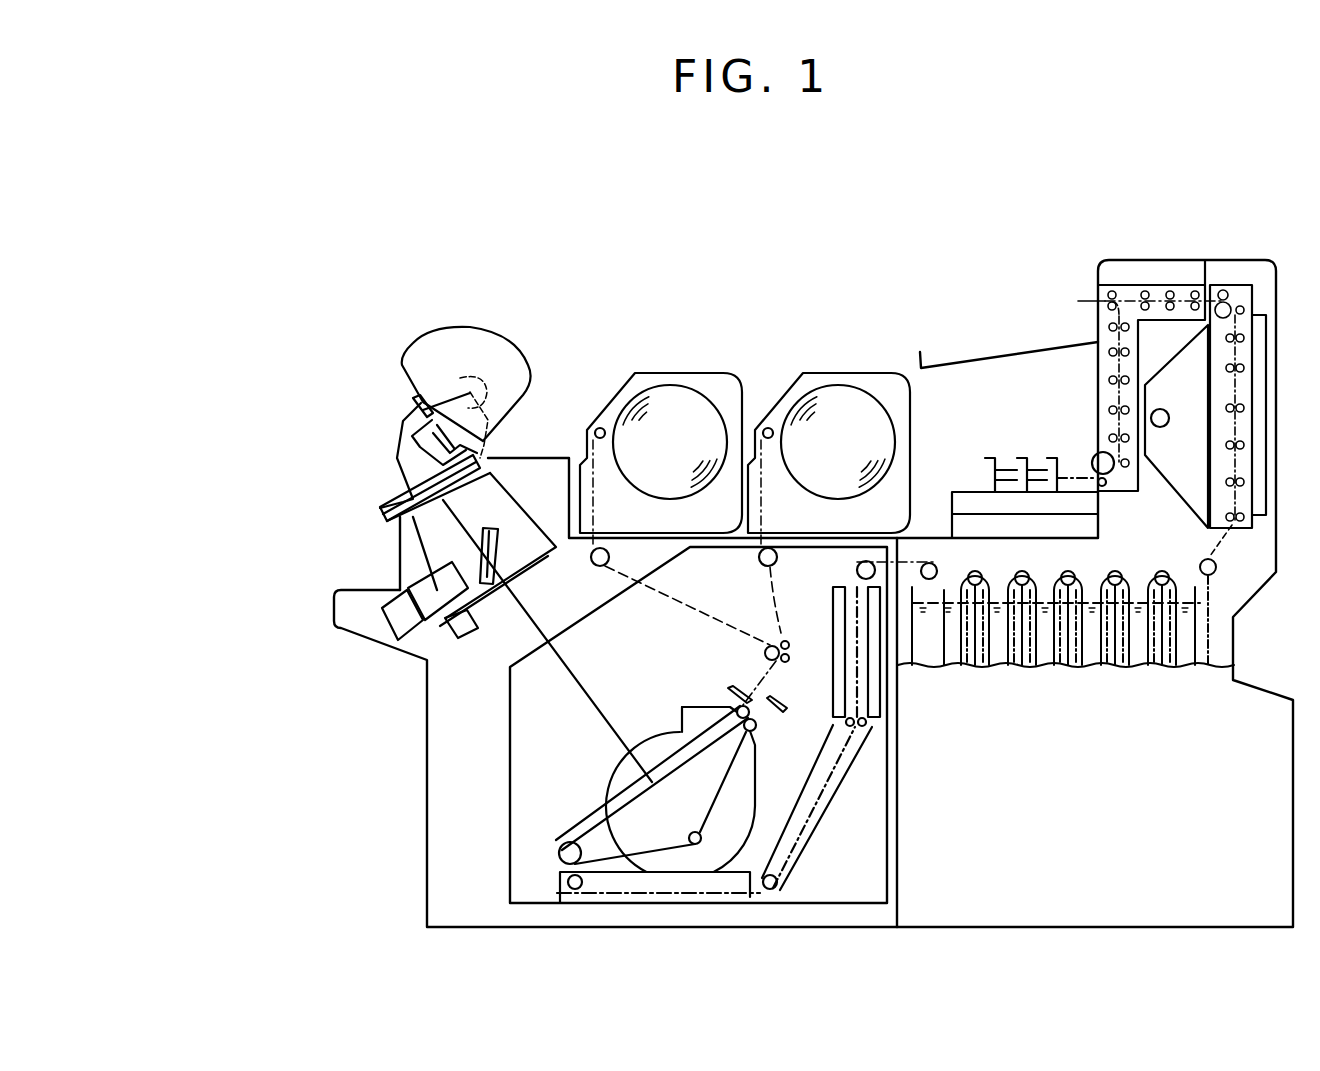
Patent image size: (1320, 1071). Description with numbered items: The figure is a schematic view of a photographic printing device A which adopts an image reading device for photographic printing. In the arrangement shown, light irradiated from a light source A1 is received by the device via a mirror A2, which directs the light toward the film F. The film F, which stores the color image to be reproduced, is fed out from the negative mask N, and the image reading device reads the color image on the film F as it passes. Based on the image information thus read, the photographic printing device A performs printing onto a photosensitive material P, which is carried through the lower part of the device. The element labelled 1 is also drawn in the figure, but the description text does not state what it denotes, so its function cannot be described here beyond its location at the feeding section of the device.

The photographic printing device A is at (818, 340).
The light source A1 is at (470, 392).
The mirror A2 is at (482, 543).
The film F is at (530, 374).
The negative mask N is at (397, 507).
The photosensitive material P is at (633, 790).
The film feeding device 1 is at (370, 618).